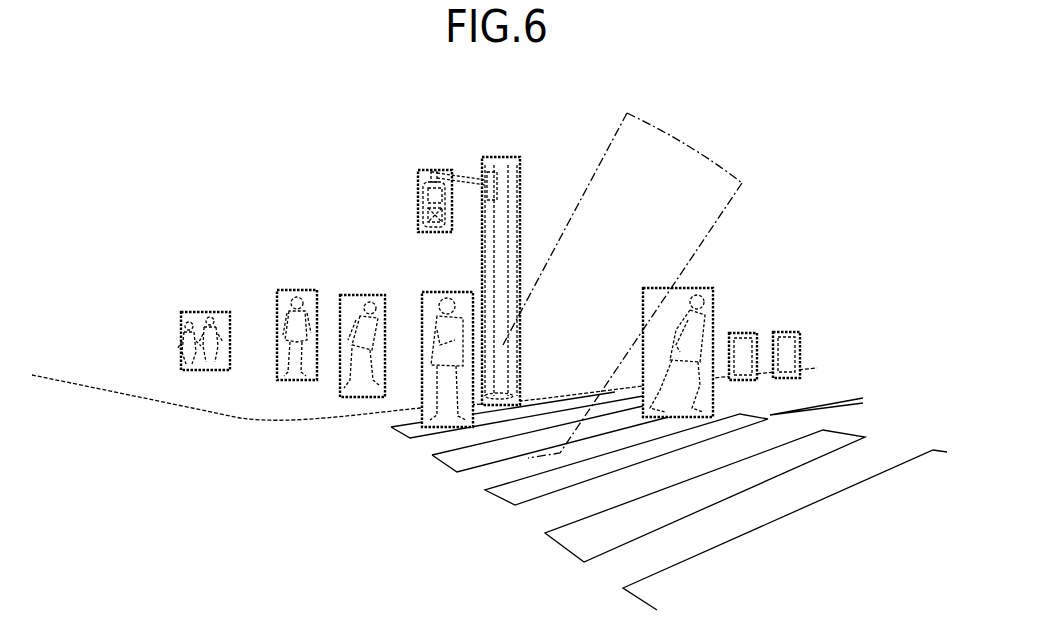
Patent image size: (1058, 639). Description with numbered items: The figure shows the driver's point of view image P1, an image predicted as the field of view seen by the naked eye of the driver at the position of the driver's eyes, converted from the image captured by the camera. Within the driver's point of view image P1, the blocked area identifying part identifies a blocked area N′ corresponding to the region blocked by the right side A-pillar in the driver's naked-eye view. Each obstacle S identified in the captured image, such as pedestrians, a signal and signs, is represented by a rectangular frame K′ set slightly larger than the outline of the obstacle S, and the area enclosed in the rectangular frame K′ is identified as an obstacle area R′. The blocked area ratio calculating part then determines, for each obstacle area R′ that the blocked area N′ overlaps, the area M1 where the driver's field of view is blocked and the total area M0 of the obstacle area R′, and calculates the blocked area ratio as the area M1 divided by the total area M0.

The driver's point of view image P1 is at (218, 198).
The rectangular frame K′ is at (197, 312).
The obstacle area R′ is at (526, 263).
The obstacle S is at (192, 347).
The total area of the obstacle area M0 is at (513, 247).
The area where the field of view of the driver is blocked M1 is at (647, 287).
The blocked area N′ is at (677, 128).